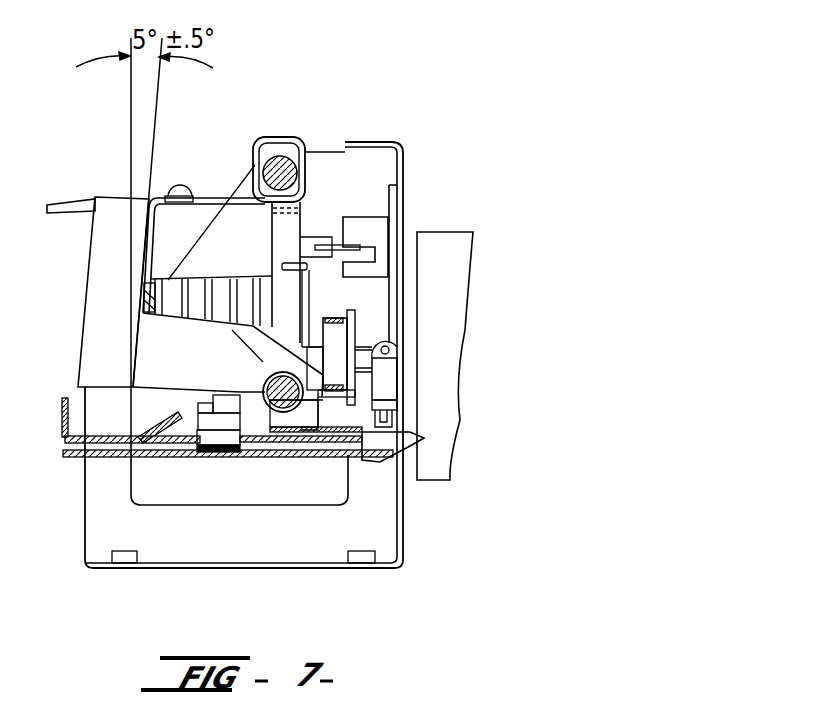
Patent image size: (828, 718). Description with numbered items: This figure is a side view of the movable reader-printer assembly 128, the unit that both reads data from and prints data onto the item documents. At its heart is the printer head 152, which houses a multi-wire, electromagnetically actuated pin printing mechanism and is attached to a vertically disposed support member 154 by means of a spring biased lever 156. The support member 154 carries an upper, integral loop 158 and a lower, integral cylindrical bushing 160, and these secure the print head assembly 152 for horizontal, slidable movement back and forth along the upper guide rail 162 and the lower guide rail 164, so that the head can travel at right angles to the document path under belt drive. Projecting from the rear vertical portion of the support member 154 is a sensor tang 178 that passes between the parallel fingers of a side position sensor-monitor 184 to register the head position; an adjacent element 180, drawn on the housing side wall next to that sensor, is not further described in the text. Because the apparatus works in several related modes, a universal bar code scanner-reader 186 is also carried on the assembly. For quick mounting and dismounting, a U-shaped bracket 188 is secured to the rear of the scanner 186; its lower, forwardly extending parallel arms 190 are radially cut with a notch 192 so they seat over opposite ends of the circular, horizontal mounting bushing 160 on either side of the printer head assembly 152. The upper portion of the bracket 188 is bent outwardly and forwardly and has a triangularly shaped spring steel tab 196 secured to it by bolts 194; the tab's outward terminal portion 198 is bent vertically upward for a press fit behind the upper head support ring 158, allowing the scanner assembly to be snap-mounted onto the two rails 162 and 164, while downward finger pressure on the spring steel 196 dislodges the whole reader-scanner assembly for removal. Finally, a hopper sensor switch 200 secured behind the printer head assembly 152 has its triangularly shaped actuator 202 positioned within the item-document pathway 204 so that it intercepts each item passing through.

The reader-printer assembly 128 is at (414, 146).
The printer head 152 is at (241, 274).
The support member 154 is at (285, 233).
The spring biased lever 156 is at (307, 316).
The upper integral loop 158 is at (287, 117).
The lower integral cylindrical bushing 160 is at (277, 367).
The upper guide rail 162 is at (283, 162).
The lower guide rail 164 is at (275, 415).
The sensor tang 178 is at (333, 245).
The bracket 180 is at (375, 228).
The left side position sensor-monitor 184 is at (380, 258).
The universal bar code scanner-reader 186 is at (85, 287).
The U-shaped bracket 188 is at (147, 268).
The parallel arms 190 is at (203, 353).
The radial notch 192 is at (266, 383).
The bolts 194 is at (182, 190).
The spring steel tab 196 is at (222, 200).
The terminal portion 198 is at (302, 190).
The hopper sensor switch 200 is at (387, 383).
The actuator 202 is at (390, 446).
The item-document pathway 204 is at (70, 440).